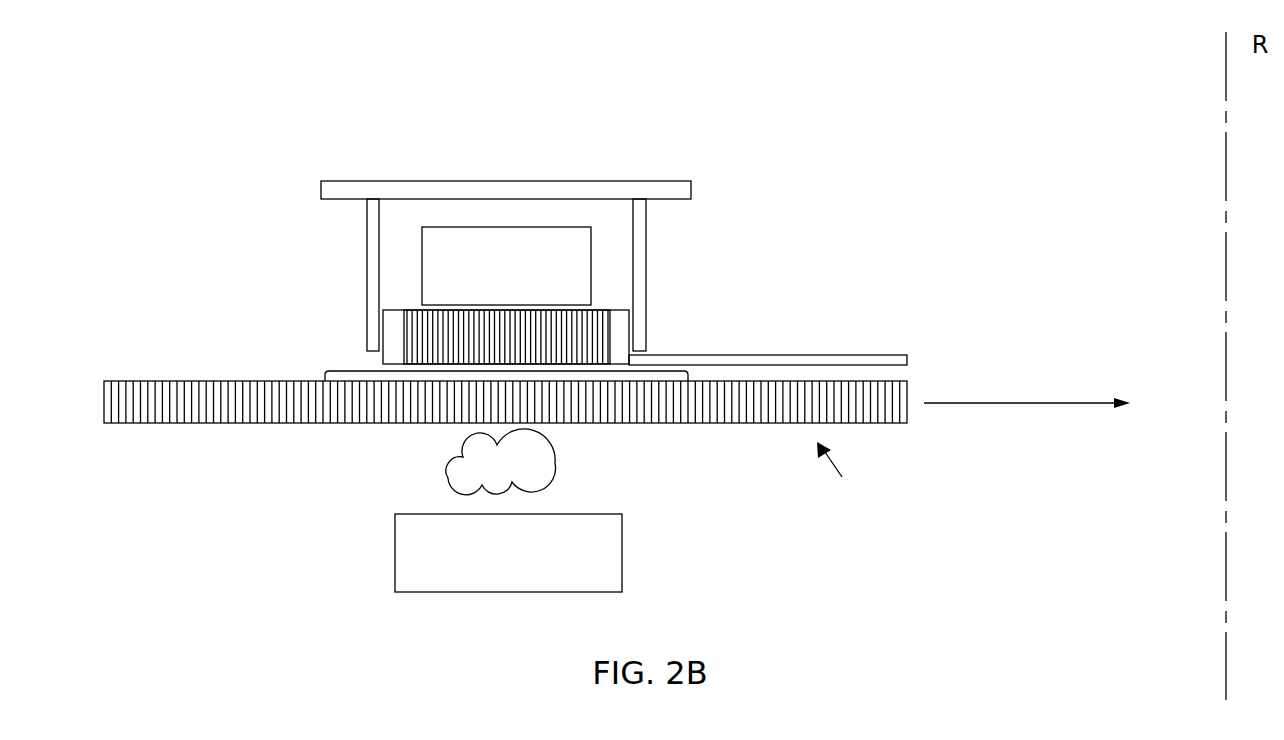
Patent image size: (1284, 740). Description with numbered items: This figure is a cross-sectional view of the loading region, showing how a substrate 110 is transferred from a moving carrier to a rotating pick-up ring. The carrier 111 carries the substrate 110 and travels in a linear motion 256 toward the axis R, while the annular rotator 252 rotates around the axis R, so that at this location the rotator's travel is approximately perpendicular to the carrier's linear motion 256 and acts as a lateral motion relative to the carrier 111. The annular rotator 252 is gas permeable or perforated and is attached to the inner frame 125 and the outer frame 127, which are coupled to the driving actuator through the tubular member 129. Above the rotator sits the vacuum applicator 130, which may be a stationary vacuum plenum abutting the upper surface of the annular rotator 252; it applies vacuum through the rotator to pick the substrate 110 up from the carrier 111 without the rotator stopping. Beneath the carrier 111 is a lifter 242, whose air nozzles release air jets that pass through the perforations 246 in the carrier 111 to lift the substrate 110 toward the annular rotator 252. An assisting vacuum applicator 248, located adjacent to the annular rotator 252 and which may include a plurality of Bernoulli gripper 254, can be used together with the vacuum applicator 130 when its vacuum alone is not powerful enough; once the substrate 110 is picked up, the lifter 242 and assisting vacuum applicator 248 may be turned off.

The substrate 110 is at (325, 378).
The carrier 111 is at (150, 381).
The inner frame 125 is at (635, 338).
The outer frame 127 is at (382, 318).
The tubular member 129 is at (847, 355).
The vacuum applicator 130 is at (485, 278).
The lifter 242 is at (481, 562).
The perforations 246 is at (840, 475).
The assisting vacuum applicator 248 is at (665, 181).
The annular rotator 252 is at (458, 335).
The Bernoulli gripper 254 is at (352, 222).
The linear motion 256 is at (1054, 403).